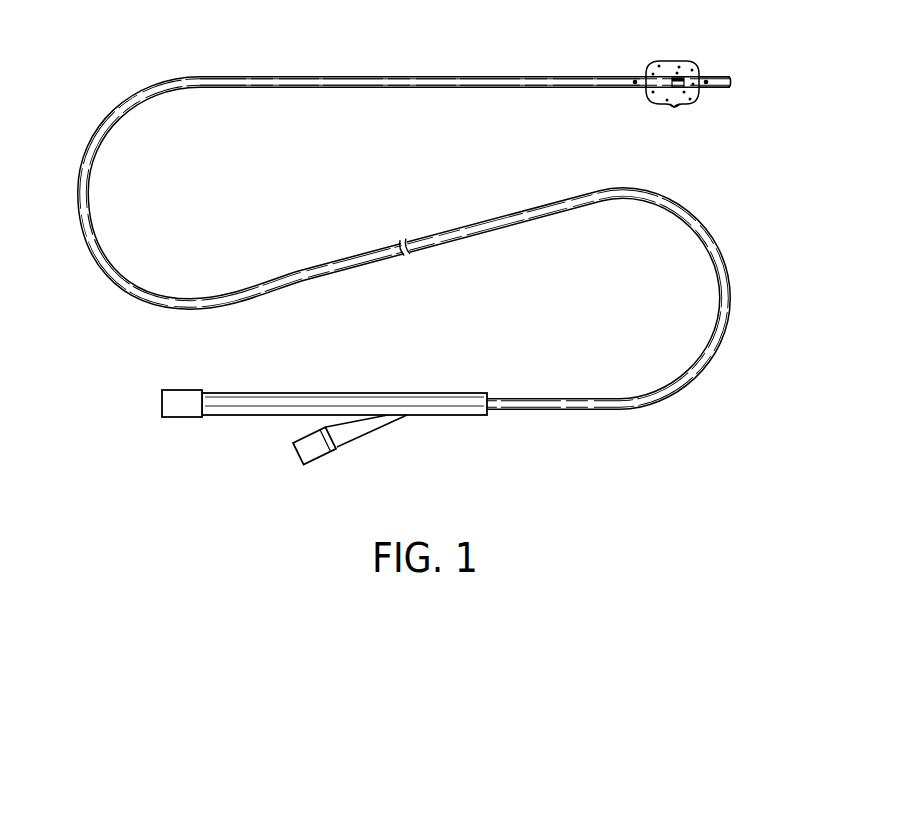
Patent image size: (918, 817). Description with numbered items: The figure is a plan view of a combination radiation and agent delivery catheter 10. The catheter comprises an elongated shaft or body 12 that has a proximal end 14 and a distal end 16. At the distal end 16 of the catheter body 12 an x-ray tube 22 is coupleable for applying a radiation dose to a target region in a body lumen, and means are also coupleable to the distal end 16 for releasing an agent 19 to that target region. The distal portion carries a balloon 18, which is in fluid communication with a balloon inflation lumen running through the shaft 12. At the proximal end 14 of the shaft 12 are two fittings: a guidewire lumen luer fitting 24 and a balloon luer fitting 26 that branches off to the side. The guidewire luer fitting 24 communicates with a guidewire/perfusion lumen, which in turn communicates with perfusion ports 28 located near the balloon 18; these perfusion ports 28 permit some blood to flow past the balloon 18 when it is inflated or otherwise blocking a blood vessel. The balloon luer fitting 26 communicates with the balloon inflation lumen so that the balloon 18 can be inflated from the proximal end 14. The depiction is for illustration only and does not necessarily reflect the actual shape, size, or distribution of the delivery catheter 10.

The combination radiation and agent delivery catheter 10 is at (446, 258).
The shaft or body 12 is at (313, 258).
The proximal end 14 is at (428, 417).
The distal end 16 is at (545, 78).
The balloon 18 is at (653, 63).
The agent 19 is at (676, 105).
The x-ray tube 22 is at (681, 76).
The guidewire lumen luer fitting 24 is at (188, 390).
The balloon luer fitting 26 is at (309, 468).
The perfusion ports 28 is at (635, 87).